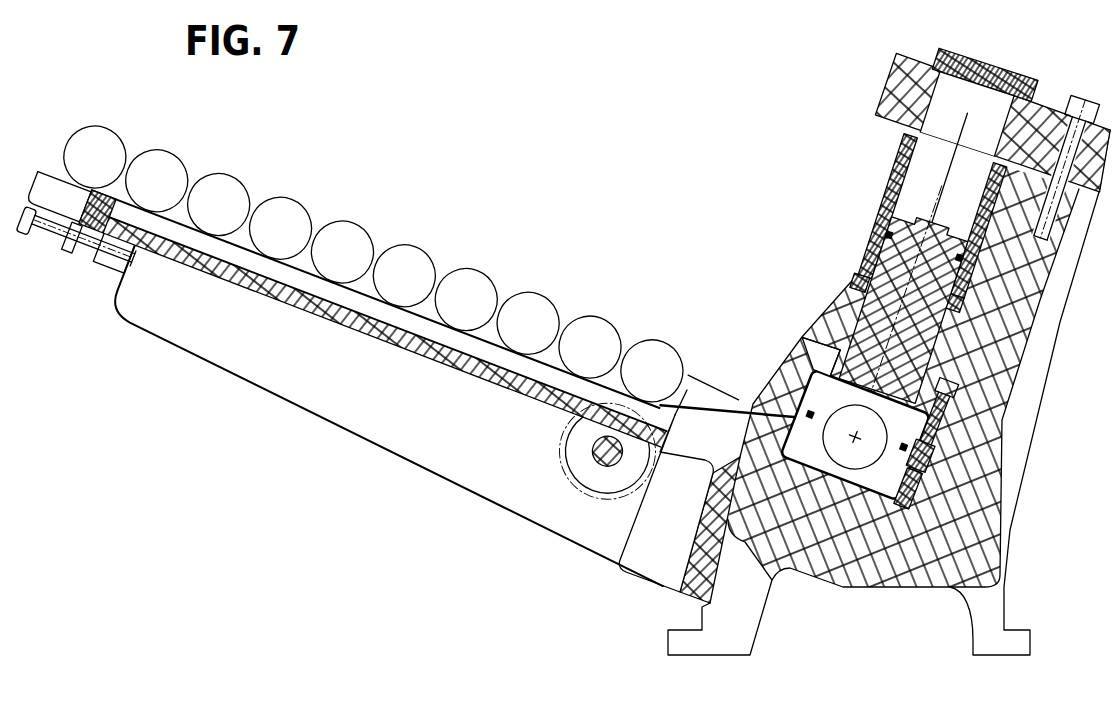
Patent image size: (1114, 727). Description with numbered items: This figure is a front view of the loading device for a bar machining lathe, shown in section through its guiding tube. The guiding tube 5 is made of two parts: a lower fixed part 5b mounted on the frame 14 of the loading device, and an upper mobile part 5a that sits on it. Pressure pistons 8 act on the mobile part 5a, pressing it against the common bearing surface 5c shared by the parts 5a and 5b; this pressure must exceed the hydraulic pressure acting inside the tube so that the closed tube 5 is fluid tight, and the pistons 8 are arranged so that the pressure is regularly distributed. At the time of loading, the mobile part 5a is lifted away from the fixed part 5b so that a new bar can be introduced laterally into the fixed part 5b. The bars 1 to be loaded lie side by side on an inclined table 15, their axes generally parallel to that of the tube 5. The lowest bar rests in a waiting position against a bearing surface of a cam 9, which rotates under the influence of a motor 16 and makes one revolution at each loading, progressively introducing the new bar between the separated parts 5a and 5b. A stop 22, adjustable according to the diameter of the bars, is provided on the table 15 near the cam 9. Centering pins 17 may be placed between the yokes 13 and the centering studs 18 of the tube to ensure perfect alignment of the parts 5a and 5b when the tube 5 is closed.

The bars 1 is at (213, 183).
The guiding tube 5 is at (845, 455).
The upper mobile part of the tube 5a is at (800, 334).
The lower fixed part of the tube 5b is at (823, 415).
The common bearing surface 5c is at (878, 455).
The pressure pistons 8 is at (902, 255).
The cams 9 is at (612, 545).
The yokes 13 is at (828, 352).
The frame 14 is at (970, 558).
The inclined table 15 is at (348, 300).
The motor 16 is at (560, 472).
The centering pins 17 is at (937, 450).
The centering studs 18 is at (920, 483).
The stop 22 is at (738, 420).